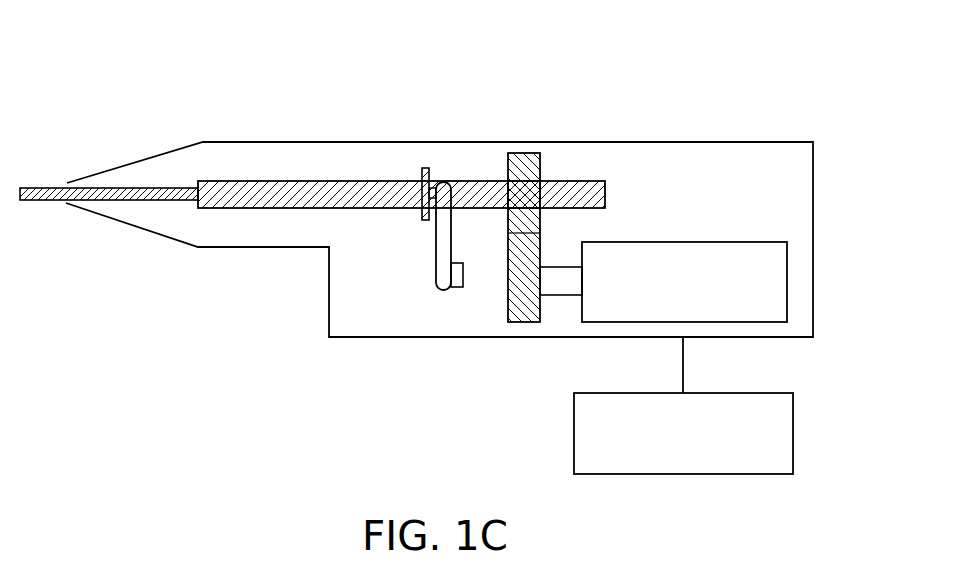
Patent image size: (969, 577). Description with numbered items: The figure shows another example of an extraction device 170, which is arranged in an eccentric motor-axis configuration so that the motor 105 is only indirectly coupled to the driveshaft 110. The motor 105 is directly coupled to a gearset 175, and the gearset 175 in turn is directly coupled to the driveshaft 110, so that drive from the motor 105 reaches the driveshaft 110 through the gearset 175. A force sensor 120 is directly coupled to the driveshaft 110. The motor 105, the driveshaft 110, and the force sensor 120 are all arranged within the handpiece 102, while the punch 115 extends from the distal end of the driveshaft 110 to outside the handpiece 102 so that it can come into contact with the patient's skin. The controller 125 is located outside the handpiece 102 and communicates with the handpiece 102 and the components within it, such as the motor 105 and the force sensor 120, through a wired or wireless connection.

The extraction device 170 is at (138, 76).
The handpiece 102 is at (788, 160).
The driveshaft 110 is at (250, 190).
The punch 115 is at (118, 195).
The force sensor 120 is at (447, 283).
The gearset 175 is at (527, 307).
The motor 105 is at (787, 283).
The controller 125 is at (574, 430).